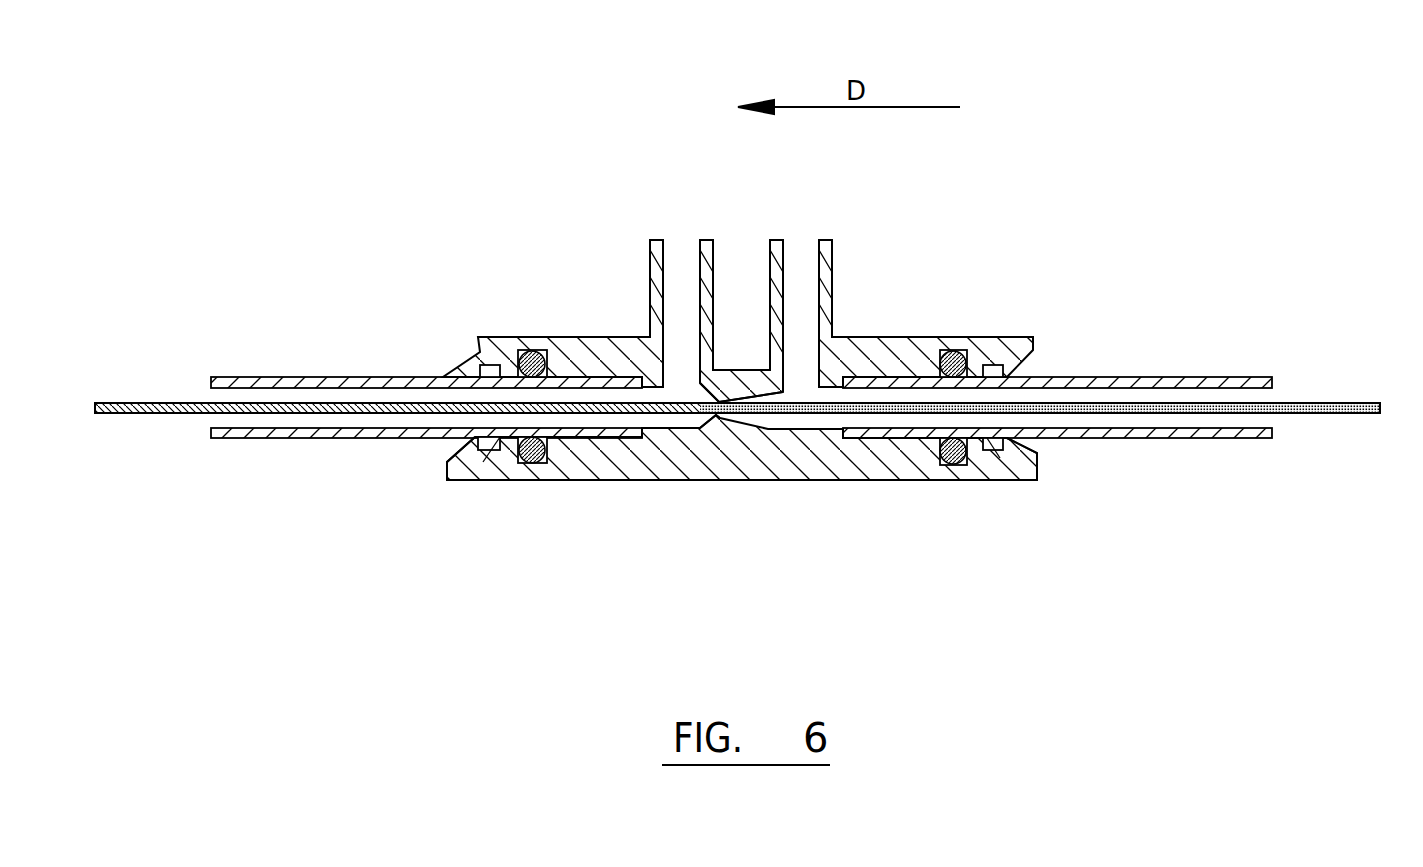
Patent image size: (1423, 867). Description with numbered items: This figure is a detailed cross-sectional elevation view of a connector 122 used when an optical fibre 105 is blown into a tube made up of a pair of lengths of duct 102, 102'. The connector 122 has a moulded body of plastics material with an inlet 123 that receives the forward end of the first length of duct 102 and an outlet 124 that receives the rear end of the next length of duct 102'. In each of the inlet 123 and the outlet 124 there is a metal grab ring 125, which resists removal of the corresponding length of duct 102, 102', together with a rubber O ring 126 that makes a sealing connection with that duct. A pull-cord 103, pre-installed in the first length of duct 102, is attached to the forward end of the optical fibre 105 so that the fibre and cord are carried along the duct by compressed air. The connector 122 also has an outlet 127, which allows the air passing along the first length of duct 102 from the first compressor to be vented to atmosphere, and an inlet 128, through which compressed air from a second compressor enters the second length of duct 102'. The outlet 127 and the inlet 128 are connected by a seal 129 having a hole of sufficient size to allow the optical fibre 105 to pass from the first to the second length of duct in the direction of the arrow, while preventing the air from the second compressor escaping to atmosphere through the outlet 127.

The first length of duct 102 is at (1057, 472).
The next length of duct 102' is at (412, 471).
The pull-cord 103 is at (152, 412).
The optical fibre 105 is at (1327, 415).
The connector 122 is at (778, 455).
The inlet 123 is at (1038, 450).
The outlet 124 is at (447, 450).
The metal grab ring 125 is at (482, 357).
The rubber 'O' ring 126 is at (525, 352).
The outlet 127 is at (803, 255).
The inlet 128 is at (688, 258).
The seal 129 is at (714, 413).